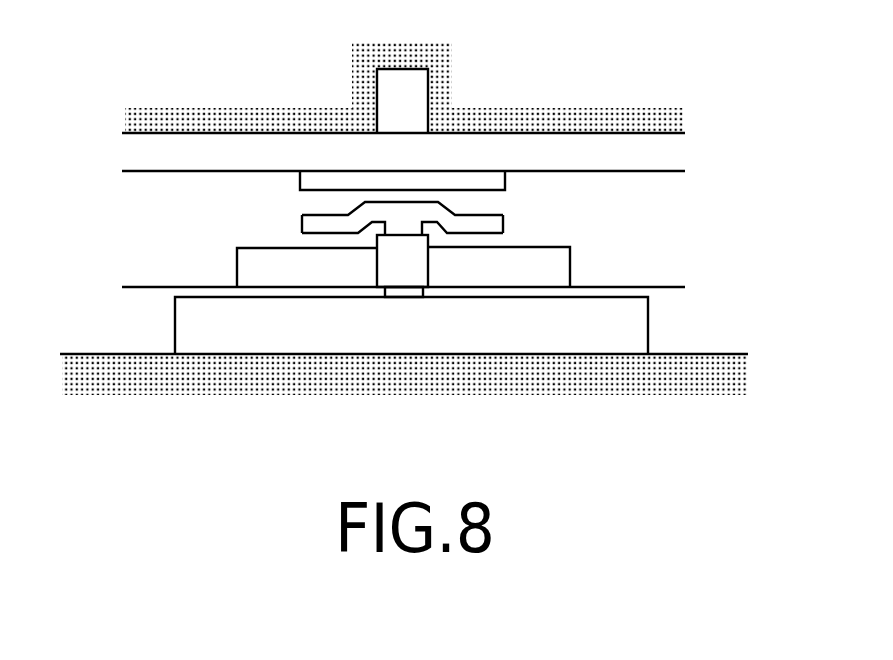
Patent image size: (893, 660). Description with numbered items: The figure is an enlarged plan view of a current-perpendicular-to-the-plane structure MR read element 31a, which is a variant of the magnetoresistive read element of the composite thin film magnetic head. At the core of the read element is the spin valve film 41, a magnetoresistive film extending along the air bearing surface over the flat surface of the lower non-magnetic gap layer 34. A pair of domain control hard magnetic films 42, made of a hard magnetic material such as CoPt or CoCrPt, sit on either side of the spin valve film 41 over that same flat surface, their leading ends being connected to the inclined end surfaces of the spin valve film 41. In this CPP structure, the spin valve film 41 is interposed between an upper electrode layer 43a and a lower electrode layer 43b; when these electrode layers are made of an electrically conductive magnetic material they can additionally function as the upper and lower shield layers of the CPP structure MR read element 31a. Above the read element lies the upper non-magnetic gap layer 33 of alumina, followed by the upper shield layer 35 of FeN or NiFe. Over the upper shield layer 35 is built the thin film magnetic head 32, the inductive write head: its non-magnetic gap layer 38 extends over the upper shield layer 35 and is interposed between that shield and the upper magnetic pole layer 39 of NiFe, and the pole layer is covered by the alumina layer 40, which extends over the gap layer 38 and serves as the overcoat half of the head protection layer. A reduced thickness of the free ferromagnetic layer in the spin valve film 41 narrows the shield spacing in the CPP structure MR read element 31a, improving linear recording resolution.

The thin film magnetic head 32 is at (400, 96).
The non-magnetic gap layer 38 is at (652, 132).
The upper magnetic pole layer 39 is at (382, 87).
The alumina layer 40 is at (152, 135).
The upper non-magnetic gap layer 33 is at (648, 170).
The upper shield layer 35 is at (300, 185).
The upper electrode layer 43a is at (498, 223).
The spin valve film 41 is at (382, 262).
The domain control hard magnetic films 42 is at (245, 277).
The lower non-magnetic gap layer 34 is at (648, 285).
The lower electrode layer 43b is at (372, 348).
The CPP structure MR read element 31a is at (457, 323).